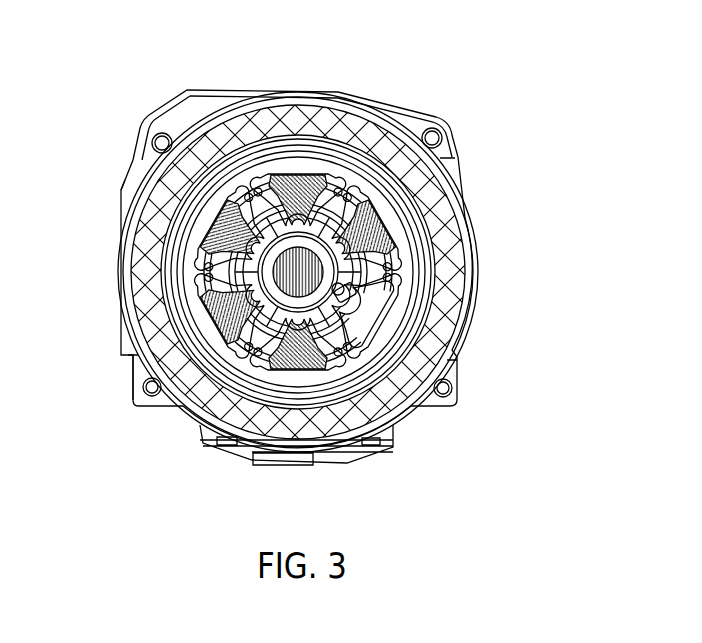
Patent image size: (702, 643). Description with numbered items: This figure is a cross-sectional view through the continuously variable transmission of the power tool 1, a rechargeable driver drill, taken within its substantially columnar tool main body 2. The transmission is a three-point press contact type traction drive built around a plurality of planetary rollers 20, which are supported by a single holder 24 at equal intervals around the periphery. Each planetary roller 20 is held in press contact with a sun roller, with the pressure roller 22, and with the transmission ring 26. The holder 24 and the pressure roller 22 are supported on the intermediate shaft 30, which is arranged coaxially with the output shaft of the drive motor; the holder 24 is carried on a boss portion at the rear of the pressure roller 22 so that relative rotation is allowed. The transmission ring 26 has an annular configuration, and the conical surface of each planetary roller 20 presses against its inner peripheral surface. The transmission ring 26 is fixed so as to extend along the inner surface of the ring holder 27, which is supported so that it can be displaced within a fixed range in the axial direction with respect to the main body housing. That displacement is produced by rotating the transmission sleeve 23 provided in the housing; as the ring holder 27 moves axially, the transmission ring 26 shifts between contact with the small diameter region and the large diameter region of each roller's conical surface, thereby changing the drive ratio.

The power tool 1 is at (339, 75).
The tool main body 2 is at (223, 103).
The planetary roller 20 is at (228, 234).
The pressure roller 22 is at (262, 268).
The transmission sleeve 23 is at (193, 412).
The holder 24 is at (216, 205).
The transmission ring 26 is at (213, 232).
The ring holder 27 is at (373, 363).
The intermediate shaft 30 is at (418, 147).